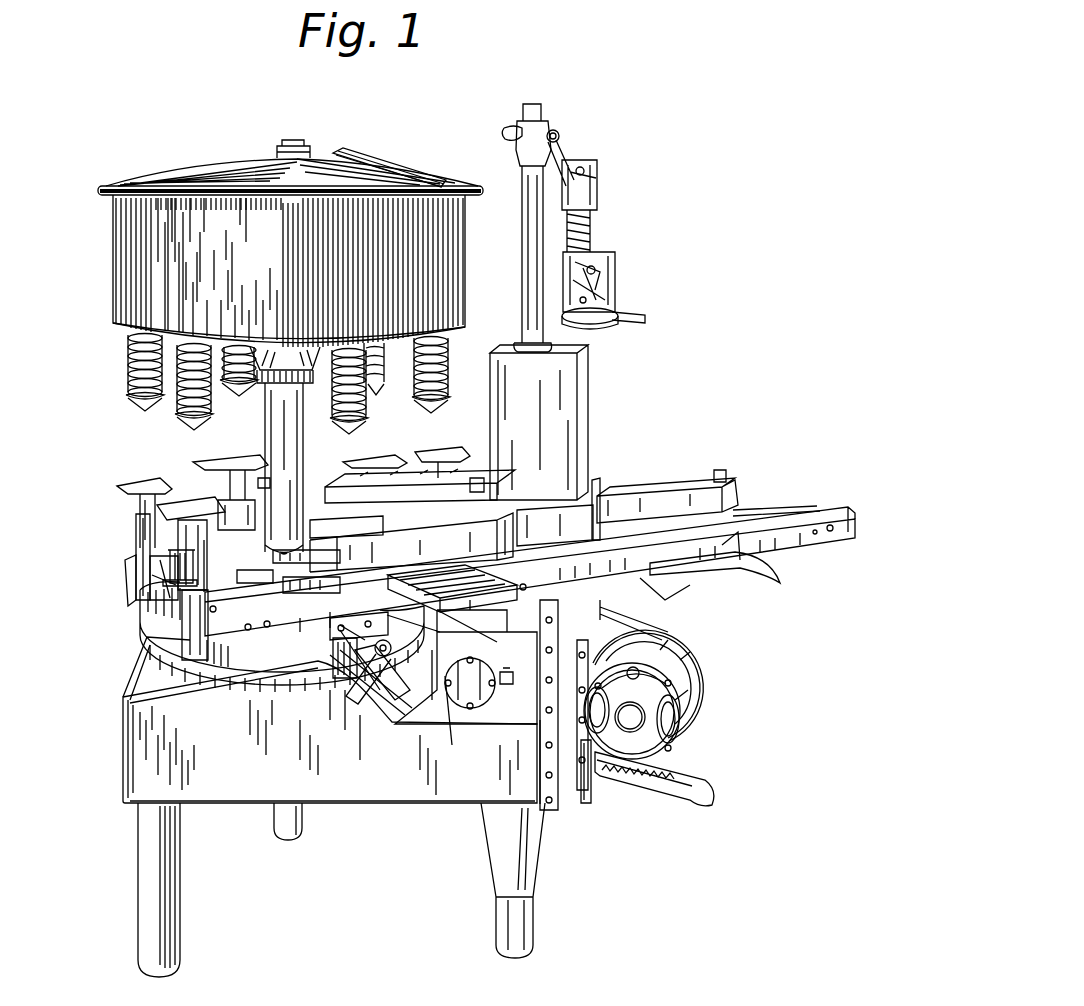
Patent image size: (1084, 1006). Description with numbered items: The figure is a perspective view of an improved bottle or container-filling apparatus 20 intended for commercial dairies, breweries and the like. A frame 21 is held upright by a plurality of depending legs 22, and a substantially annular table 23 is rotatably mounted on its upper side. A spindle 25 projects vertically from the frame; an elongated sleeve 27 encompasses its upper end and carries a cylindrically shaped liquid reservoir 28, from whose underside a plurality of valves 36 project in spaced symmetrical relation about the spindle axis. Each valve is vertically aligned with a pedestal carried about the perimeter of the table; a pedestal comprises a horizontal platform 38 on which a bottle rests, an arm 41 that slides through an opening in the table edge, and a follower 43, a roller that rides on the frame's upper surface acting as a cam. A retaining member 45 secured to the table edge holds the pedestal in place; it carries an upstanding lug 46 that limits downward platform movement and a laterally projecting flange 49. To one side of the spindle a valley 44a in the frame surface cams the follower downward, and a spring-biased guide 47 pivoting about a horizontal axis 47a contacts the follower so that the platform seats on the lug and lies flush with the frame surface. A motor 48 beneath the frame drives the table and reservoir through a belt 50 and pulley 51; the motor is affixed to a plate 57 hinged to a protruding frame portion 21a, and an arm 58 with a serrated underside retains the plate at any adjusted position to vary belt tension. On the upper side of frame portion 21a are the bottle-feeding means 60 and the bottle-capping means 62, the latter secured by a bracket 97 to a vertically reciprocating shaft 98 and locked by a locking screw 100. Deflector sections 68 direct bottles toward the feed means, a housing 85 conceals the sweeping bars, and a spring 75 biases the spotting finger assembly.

The container-filling apparatus 20 is at (389, 810).
The frame 21 is at (236, 798).
The protruding portion of the frame 21a is at (550, 815).
The legs 22 is at (172, 927).
The annular table 23 is at (145, 612).
The spindle 25 is at (300, 510).
The sleeve 27 is at (280, 425).
The liquid reservoir 28 is at (272, 258).
The valves 36 is at (172, 425).
The platform 38 is at (370, 457).
The arm 41 is at (183, 647).
The follower 43 is at (180, 678).
The valley 44a is at (405, 718).
The retaining member 45 is at (121, 602).
The lug 46 is at (136, 530).
The spring-biased guide 47 is at (370, 695).
The horizontal axis 47a is at (335, 680).
The motor 48 is at (688, 681).
The flange 49 is at (136, 556).
The belt 50 is at (600, 610).
The pulley 51 is at (452, 687).
The plate 57 is at (591, 786).
The arm 58 is at (714, 793).
The bottle-feeding means 60 is at (590, 519).
The bottle-capping means 62 is at (626, 267).
The deflector sections 68 is at (462, 552).
The spring 75 is at (448, 722).
The housing 85 is at (688, 492).
The bracket 97 is at (556, 148).
The vertically reciprocating shaft 98 is at (541, 104).
The locking screw 100 is at (506, 130).